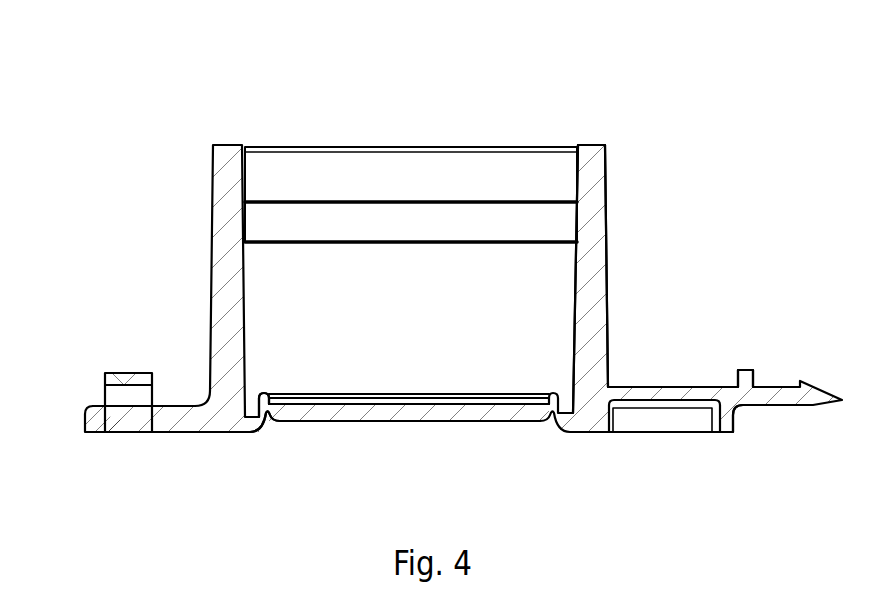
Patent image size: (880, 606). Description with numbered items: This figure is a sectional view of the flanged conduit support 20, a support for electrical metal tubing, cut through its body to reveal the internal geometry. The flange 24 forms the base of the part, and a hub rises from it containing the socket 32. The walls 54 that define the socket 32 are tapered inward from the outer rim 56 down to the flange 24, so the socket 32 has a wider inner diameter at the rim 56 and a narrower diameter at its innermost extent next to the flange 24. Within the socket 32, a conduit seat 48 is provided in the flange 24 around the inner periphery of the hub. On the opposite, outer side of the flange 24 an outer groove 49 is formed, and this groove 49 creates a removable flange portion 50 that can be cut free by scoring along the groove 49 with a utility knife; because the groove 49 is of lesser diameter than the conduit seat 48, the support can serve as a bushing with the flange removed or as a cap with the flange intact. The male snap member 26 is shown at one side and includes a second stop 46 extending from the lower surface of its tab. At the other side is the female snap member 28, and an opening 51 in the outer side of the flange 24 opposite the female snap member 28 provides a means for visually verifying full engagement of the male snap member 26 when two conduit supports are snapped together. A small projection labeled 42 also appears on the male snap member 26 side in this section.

The flanged conduit support 20 is at (160, 138).
The flange 24 is at (223, 412).
The male snap member 26 is at (670, 387).
The female snap member 28 is at (110, 353).
The socket 32 is at (433, 185).
The locating tab 42 is at (747, 368).
The second stop 46 is at (725, 432).
The conduit seat 48 is at (250, 400).
The outer groove 49 is at (268, 416).
The removable flange portion 50 is at (425, 415).
The opening 51 is at (125, 422).
The walls 54 is at (593, 228).
The outer rim 56 is at (593, 147).